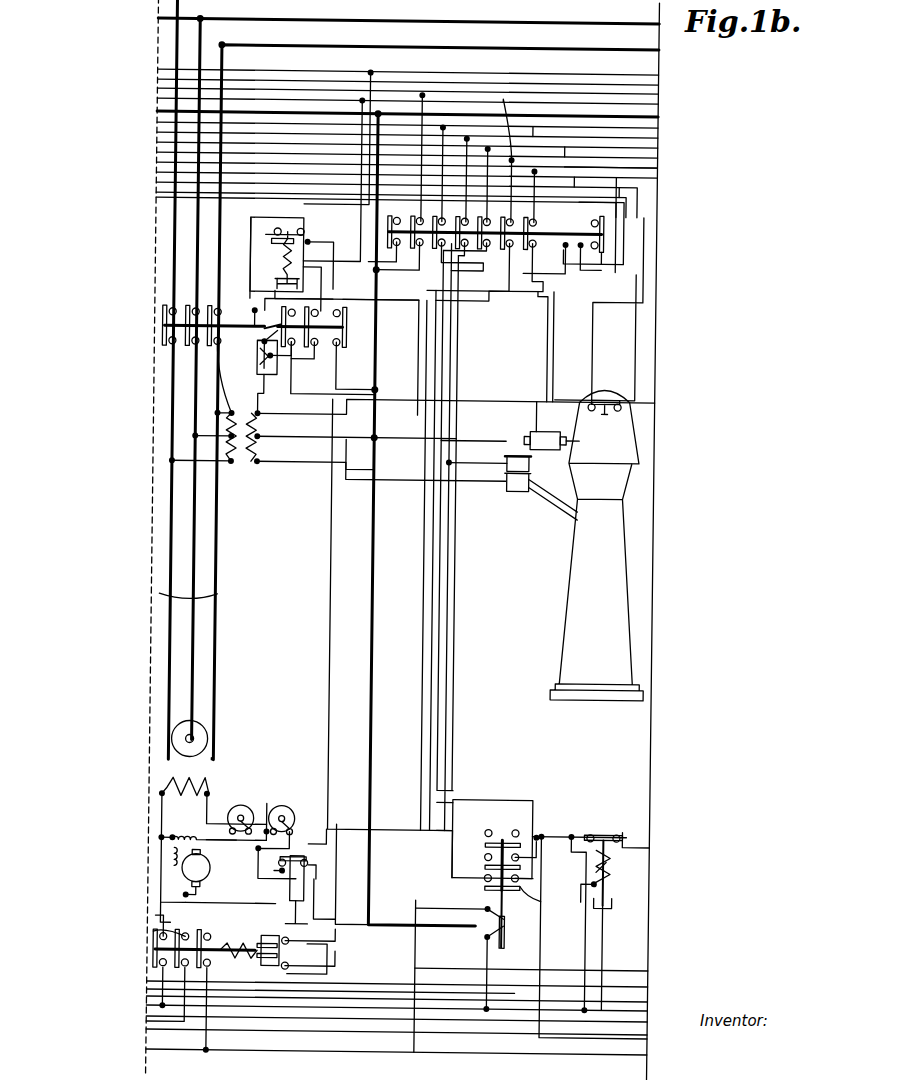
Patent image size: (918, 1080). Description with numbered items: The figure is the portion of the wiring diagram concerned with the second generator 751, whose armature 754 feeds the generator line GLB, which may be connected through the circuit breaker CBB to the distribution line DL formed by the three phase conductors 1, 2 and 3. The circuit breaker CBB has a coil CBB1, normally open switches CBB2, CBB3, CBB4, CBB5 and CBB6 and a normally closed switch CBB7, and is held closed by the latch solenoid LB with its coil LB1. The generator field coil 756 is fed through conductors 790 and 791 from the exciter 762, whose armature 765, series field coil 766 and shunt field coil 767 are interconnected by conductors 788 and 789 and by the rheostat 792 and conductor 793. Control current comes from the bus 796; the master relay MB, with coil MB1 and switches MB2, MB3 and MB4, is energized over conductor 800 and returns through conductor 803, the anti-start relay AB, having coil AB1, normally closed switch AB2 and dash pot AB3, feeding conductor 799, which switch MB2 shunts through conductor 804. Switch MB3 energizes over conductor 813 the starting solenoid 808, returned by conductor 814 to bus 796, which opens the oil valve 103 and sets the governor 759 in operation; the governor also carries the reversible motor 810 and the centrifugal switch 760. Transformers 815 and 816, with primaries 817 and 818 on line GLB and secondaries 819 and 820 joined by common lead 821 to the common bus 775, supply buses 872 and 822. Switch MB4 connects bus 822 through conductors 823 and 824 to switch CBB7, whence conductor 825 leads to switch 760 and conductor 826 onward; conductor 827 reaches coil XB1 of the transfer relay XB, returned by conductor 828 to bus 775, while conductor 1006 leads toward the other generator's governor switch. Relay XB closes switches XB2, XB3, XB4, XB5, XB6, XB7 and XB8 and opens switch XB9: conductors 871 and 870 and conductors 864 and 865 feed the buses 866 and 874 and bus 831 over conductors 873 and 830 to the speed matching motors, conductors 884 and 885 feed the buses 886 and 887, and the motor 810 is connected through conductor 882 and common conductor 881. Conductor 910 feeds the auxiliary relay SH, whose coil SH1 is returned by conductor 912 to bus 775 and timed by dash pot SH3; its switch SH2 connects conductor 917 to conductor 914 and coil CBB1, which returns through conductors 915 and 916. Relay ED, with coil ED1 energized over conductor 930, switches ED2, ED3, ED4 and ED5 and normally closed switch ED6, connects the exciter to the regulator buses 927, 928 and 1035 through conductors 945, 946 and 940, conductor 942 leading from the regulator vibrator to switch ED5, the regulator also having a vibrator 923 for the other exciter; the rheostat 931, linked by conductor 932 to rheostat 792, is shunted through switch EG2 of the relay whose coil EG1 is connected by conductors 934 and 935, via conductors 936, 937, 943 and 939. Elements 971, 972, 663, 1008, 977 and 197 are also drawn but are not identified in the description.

The distribution line DL is at (140, 38).
The phase conductor 1 is at (171, 630).
The phase conductor 2 is at (193, 630).
The phase conductor 3 is at (215, 630).
The generator line GLB is at (160, 596).
The common bus 775 is at (365, 150).
The conductor 870 is at (417, 95).
The conductor 873 is at (438, 127).
The conductor 830 is at (462, 138).
The conductor 865 is at (483, 148).
The bus 874 is at (498, 98).
The bus 866 is at (530, 170).
The conductor 884 is at (528, 125).
The bus 831 is at (560, 145).
The conductor 885 is at (570, 175).
The bus 886 is at (612, 175).
The conductor 910 is at (615, 185).
The bus 887 is at (653, 165).
The conductor 864 is at (365, 207).
The conductor 871 is at (365, 245).
The conductor 914 is at (274, 240).
The auxiliary relay SH is at (268, 257).
The coil SH1 is at (270, 236).
The normally open switch SH2 is at (296, 230).
The dash pot SH3 is at (270, 285).
The conductor 912 is at (306, 232).
The conductor 917 is at (272, 292).
The normally open switch CBB6 is at (318, 305).
The circuit breaker CBB is at (162, 330).
The coil CBB1 is at (165, 312).
The normally open switch CBB2 is at (188, 312).
The normally open switch CBB3 is at (210, 313).
The normally open switch CBB4 is at (210, 343).
The normally open switch CBB5 is at (265, 325).
The normally closed switch CBB7 is at (346, 318).
The latch solenoid LB is at (262, 357).
The coil LB1 is at (279, 353).
The conductor 971 is at (312, 348).
The conductor 916 is at (334, 372).
The conductor 825 is at (334, 378).
The conductor 824 is at (412, 303).
The bus 872 is at (392, 410).
The conductor 915 is at (262, 380).
The conductor 972 is at (290, 415).
The single phase transformer 815 is at (230, 415).
The primary 817 is at (228, 438).
The primary 818 is at (228, 462).
The single phase transformer 816 is at (232, 468).
The secondary 819 is at (256, 438).
The common lead 821 is at (328, 440).
The secondary 820 is at (256, 463).
The bus 822 is at (424, 468).
The conductor 800 is at (440, 430).
The common conductor 881 is at (498, 442).
The conductor 814 is at (496, 462).
The conductor 882 is at (535, 414).
The reversible motor 810 is at (545, 436).
The starting solenoid 808 is at (528, 459).
The oil valve 103 is at (515, 490).
The governor 759 is at (600, 562).
The centrifugal switch 760 is at (603, 398).
The conductor 826 is at (590, 398).
The transfer relay XB is at (585, 228).
The coil XB1 is at (570, 255).
The normally open switch XB2 is at (384, 233).
The normally open switch XB3 is at (399, 238).
The normally open switch XB4 is at (455, 238).
The normally open switch XB5 is at (459, 231).
The normally open switch XB6 is at (467, 229).
The normally open switch XB7 is at (475, 253).
The normally open switch XB8 is at (485, 248).
The normally closed switch XB9 is at (600, 262).
The conductor 828 is at (548, 290).
The conductor 827 is at (618, 265).
The conductor 663 is at (551, 360).
The conductor 1006 is at (612, 212).
The armature 754 is at (178, 741).
The generator 751 is at (165, 790).
The conductor 791 is at (212, 808).
The field coil 756 is at (165, 794).
The conductor 790 is at (165, 840).
The shunt field coil 767 is at (176, 838).
The conductor 789 is at (175, 840).
The exciter 762 is at (178, 856).
The series field coil 766 is at (188, 870).
The armature 765 is at (190, 890).
The conductor 788 is at (165, 902).
The conductor 935 is at (160, 918).
The conductor 946 is at (158, 934).
The rheostat 792 is at (245, 808).
The conductor 932 is at (270, 805).
The rheostat 931 is at (287, 812).
The conductor 793 is at (220, 855).
The conductor 936 is at (264, 850).
The conductor 934 is at (278, 872).
The conductor 939 is at (212, 900).
The coil EG1 is at (282, 889).
The normally closed switch EG2 is at (312, 858).
The conductor 930 is at (340, 825).
The conductor 943 is at (320, 866).
The conductor 813 is at (318, 880).
The relay ED is at (310, 954).
The coil ED1 is at (254, 962).
The normally open switch ED2 is at (158, 952).
The normally open switch ED3 is at (180, 965).
The normally open switch ED4 is at (202, 966).
The normally open switch ED5 is at (300, 938).
The normally closed switch ED6 is at (290, 968).
The conductor 937 is at (312, 955).
The vibrator 923 is at (653, 968).
The conductor 1008 is at (645, 984).
The bus 796 is at (645, 1008).
The conductor 945 is at (152, 1021).
The bus 1035 is at (152, 1032).
The conductor 940 is at (212, 1030).
The bus 927 is at (312, 1052).
The bus 928 is at (480, 1020).
The master relay MB is at (508, 832).
The coil MB1 is at (500, 920).
The normally open switch MB2 is at (488, 832).
The normally open switch MB3 is at (488, 857).
The normally open switch MB4 is at (488, 878).
The conductor 977 is at (420, 942).
The conductor 803 is at (485, 958).
The conductor 804 is at (540, 838).
The conductor 197 is at (575, 848).
The conductor 823 is at (524, 885).
The conductor 942 is at (634, 975).
The normally closed switch AB2 is at (607, 833).
The conductor 799 is at (626, 830).
The anti-start relay AB is at (612, 884).
The coil AB1 is at (615, 860).
The dash pot AB3 is at (616, 903).